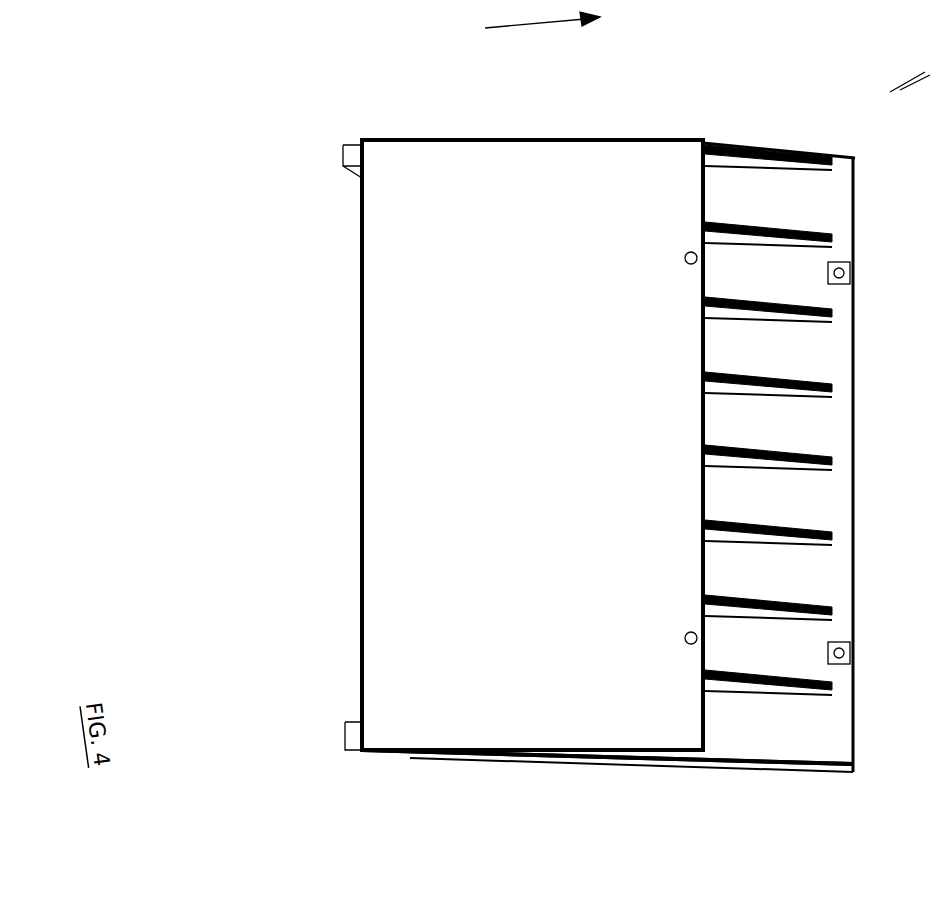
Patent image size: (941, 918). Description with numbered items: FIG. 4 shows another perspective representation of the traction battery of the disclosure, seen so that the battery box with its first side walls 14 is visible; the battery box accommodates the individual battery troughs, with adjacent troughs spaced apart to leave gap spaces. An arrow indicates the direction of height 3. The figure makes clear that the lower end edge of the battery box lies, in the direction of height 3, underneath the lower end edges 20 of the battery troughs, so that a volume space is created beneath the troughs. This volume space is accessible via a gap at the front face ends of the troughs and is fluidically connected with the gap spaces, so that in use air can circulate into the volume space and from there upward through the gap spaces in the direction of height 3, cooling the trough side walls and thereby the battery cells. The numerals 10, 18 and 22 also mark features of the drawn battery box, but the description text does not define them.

The door assembly 10 is at (345, 142).
The lower end edges of the battery troughs 20 is at (362, 300).
The first side walls 14 is at (440, 395).
The louver vents 18 is at (346, 624).
The bottom rail 22 is at (507, 694).
The direction of height 3 is at (542, 31).